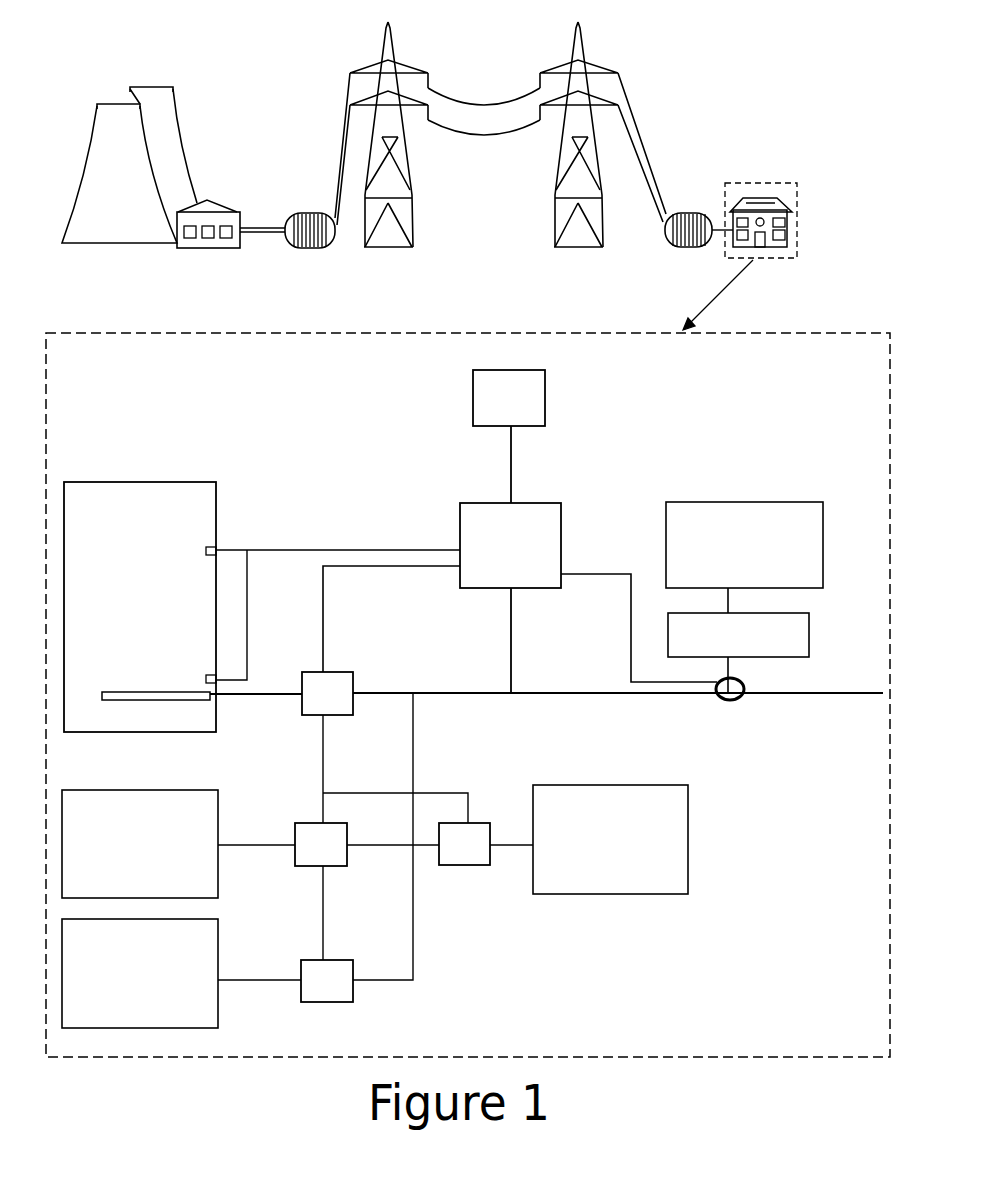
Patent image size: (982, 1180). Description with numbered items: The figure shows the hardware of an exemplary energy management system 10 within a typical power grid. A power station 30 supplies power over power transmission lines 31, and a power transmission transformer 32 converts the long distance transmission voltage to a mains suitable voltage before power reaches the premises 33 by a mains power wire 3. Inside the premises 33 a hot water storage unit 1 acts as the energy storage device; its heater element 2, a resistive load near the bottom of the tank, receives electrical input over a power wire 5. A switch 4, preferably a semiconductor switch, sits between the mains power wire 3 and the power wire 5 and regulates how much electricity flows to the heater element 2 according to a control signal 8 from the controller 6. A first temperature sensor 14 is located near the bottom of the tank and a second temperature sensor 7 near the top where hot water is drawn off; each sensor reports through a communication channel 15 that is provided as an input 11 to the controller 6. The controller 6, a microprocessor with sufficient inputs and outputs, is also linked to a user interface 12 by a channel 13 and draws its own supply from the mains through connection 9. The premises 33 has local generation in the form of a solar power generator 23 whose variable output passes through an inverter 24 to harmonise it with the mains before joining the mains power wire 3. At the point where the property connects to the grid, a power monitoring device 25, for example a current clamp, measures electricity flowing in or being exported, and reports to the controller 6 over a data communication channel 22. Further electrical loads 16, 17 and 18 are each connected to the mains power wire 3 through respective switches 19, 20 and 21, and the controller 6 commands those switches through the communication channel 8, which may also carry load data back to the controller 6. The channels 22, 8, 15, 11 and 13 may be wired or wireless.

The hot water storage unit 1 is at (110, 495).
The heater element 2 is at (112, 698).
The mains power wire 3 is at (720, 225).
The switch 4 is at (340, 708).
The power wire 5 is at (253, 694).
The controller 6 is at (550, 543).
The second temperature sensor 7 is at (208, 547).
The control signal 8 is at (323, 628).
The controller supply connection 9 is at (513, 642).
The system 10 is at (305, 442).
The inputs 11 is at (427, 550).
The user interface 12 is at (540, 408).
The data communication channel 13 is at (512, 473).
The first temperature sensor 14 is at (217, 678).
The communication channel 15 is at (247, 647).
The electrical load 16 is at (218, 813).
The electrical load 17 is at (218, 1000).
The electrical load 18 is at (547, 895).
The switch 19 is at (342, 867).
The switch 20 is at (343, 1002).
The switch 21 is at (453, 866).
The data communication channel 22 is at (631, 668).
The solar power generator 23 is at (792, 502).
The inverter 24 is at (810, 640).
The power monitoring device 25 is at (724, 698).
The power station 30 is at (170, 157).
The power transmission lines 31 is at (585, 60).
The power transmission transformer 32 is at (682, 213).
The premises 33 is at (780, 203).